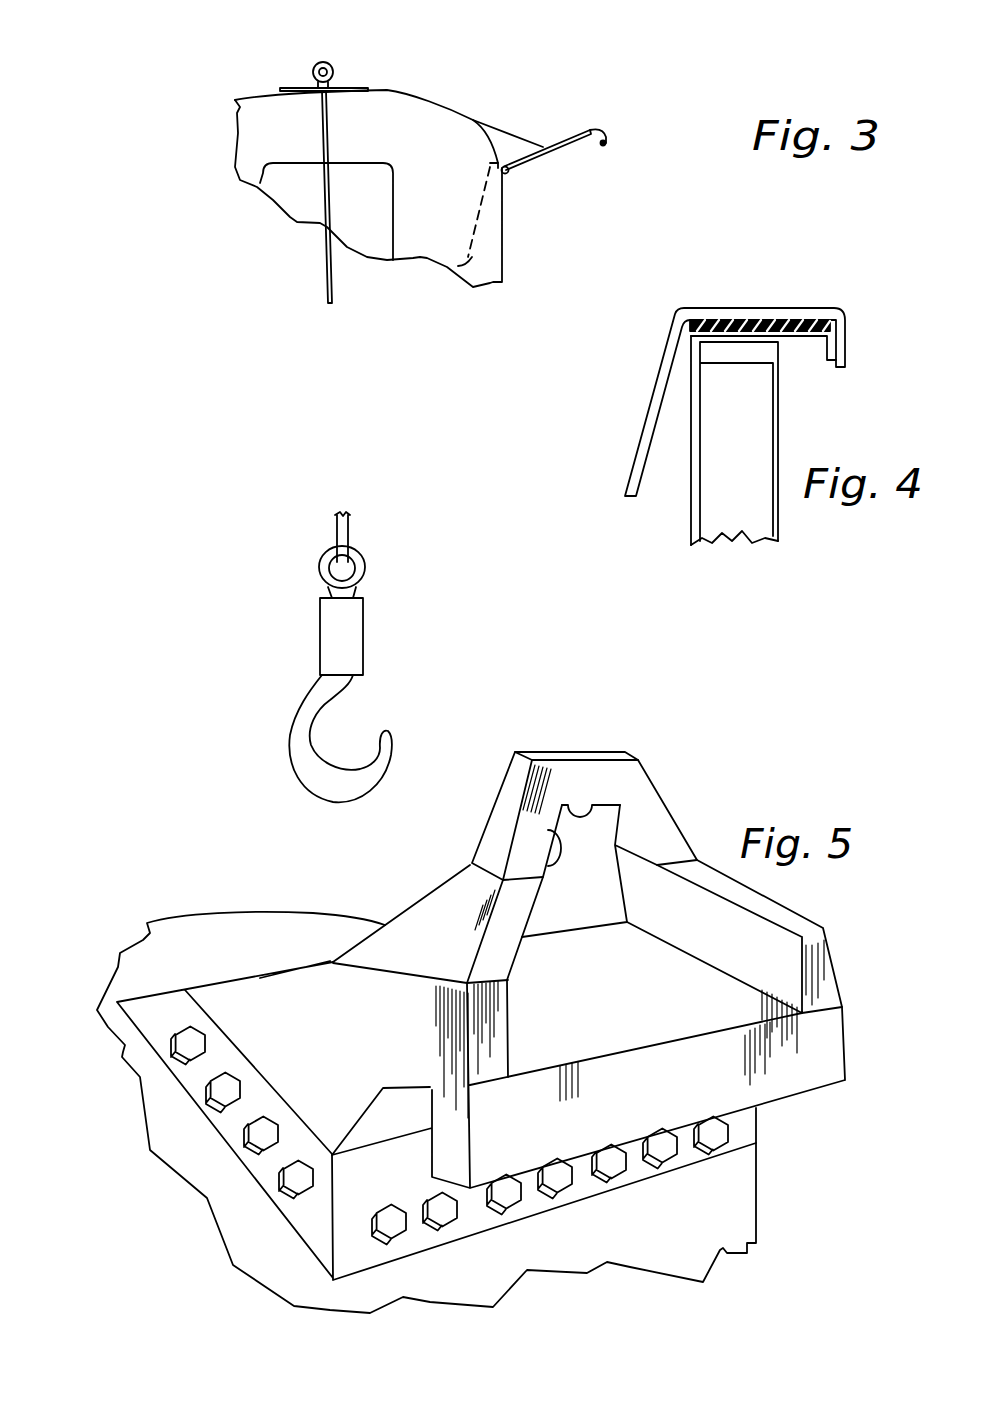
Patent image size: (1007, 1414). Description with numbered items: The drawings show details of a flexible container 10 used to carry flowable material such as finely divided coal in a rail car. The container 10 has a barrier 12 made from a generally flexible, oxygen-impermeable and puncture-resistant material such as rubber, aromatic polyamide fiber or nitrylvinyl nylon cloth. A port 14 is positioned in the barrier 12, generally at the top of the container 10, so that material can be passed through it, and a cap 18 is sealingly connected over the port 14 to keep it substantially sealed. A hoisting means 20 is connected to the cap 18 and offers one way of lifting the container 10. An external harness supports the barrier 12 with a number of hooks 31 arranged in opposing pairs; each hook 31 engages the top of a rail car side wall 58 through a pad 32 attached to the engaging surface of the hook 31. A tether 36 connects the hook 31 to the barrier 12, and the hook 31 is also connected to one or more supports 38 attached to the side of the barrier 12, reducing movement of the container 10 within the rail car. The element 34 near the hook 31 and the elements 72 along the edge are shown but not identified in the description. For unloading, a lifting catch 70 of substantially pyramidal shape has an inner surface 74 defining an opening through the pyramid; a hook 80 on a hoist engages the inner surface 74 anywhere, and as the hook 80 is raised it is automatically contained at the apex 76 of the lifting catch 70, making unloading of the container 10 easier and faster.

In FIG. 5, the container 10 is at (675, 1232).
In FIG. 3, the barrier 12 is at (388, 90).
In FIG. 5, the barrier 12 is at (742, 1213).
In FIG. 3, the port 14 is at (280, 89).
In FIG. 3, the cap 18 is at (297, 88).
In FIG. 3, the hoisting means 20 is at (317, 63).
In FIG. 3, the hook 31 is at (603, 128).
In FIG. 4, the hook 31 is at (834, 309).
In FIG. 5, the hook 31 is at (805, 1097).
In FIG. 3, the pad 32 is at (603, 145).
In FIG. 4, the pad 32 is at (830, 326).
In FIG. 3, the pivot 34 is at (510, 174).
In FIG. 3, the tether 36 is at (493, 127).
In FIG. 3, the supports 38 is at (503, 237).
In FIG. 4, the right side wall 58 is at (825, 339).
In FIG. 5, the lifting catch 70 is at (625, 902).
In FIG. 5, the fasteners 72 is at (712, 1130).
In FIG. 5, the inner surface 74 is at (548, 832).
In FIG. 5, the apex 76 is at (596, 812).
In FIG. 5, the hook 80 is at (294, 708).